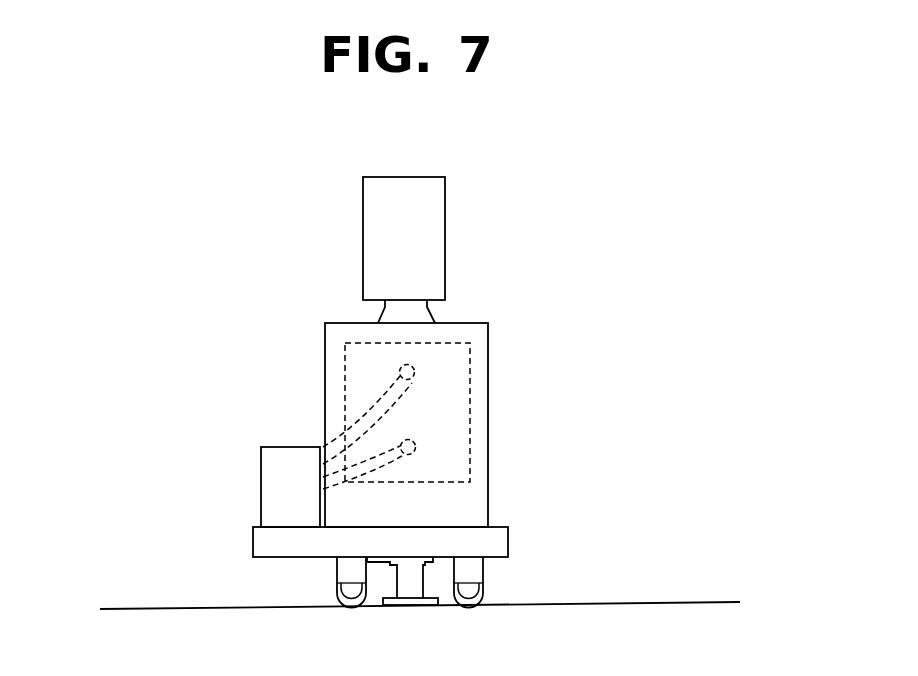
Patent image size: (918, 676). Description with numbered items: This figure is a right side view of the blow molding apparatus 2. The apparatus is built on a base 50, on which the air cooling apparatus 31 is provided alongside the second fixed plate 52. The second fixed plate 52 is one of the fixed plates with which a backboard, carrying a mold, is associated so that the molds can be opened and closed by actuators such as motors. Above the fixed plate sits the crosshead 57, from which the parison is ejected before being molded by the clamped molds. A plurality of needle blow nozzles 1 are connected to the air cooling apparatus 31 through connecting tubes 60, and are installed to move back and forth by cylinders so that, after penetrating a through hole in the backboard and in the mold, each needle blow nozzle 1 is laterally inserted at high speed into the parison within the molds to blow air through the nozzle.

The needle blow nozzle 1 is at (414, 370).
The blow molding apparatus 2 is at (527, 248).
The air cooling apparatus 31 is at (270, 467).
The base 50 is at (498, 538).
The second fixed plate 52 is at (475, 332).
The crosshead 57 is at (427, 184).
The connecting tube 60 is at (367, 417).